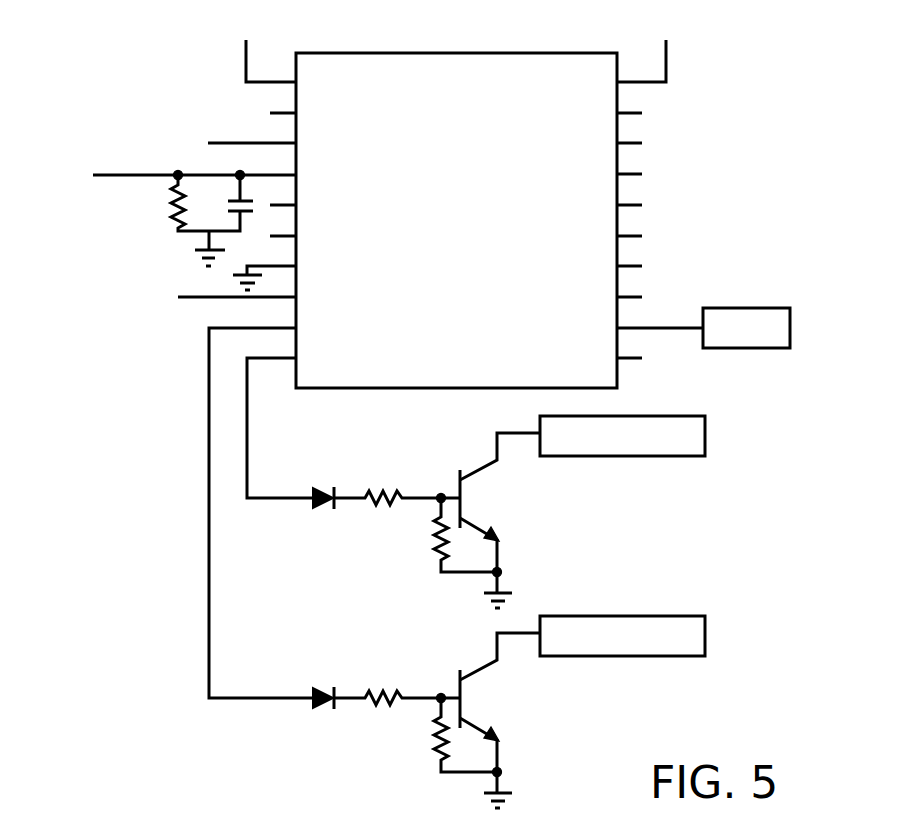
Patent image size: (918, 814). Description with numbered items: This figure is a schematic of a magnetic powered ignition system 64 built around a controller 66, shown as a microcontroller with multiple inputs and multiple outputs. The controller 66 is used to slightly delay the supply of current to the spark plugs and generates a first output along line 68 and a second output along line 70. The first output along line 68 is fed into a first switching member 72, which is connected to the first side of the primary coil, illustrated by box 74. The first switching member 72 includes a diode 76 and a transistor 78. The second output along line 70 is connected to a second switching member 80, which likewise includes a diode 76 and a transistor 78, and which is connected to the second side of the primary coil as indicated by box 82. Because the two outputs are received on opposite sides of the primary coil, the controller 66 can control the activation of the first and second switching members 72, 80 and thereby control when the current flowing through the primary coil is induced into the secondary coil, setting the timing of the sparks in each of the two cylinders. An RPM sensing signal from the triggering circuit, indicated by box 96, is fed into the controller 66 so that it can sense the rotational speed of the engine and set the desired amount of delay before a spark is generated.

The ignition system 64 is at (688, 187).
The controller 66 is at (457, 53).
The line 68 is at (247, 458).
The line 70 is at (209, 512).
The first switching member 72 is at (366, 450).
The box 74 is at (678, 416).
The diode 76 is at (314, 506).
The transistor 78 is at (493, 499).
The second switching member 80 is at (335, 640).
The box 82 is at (622, 616).
The box 96 is at (746, 308).